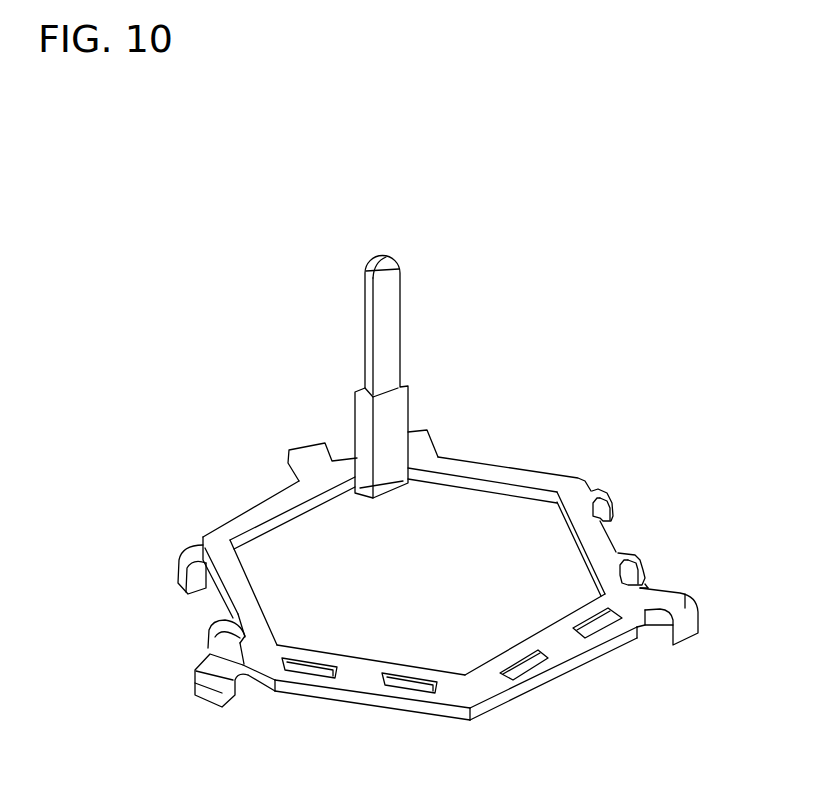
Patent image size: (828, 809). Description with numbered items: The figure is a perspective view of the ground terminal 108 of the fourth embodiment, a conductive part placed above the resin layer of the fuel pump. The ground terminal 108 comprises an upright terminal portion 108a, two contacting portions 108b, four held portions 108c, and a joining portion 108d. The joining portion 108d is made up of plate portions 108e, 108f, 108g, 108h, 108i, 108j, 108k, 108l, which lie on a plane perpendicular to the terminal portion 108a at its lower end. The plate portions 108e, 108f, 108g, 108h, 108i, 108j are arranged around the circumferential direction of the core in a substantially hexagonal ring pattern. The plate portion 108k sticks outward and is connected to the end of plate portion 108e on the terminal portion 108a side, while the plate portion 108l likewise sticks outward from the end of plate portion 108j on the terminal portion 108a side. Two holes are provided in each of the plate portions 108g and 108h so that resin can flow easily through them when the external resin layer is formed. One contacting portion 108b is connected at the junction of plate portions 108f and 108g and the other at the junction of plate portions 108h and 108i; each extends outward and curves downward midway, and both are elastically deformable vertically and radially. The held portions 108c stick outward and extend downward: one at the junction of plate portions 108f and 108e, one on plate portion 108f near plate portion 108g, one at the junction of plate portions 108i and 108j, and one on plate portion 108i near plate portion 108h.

The ground terminal 108 is at (473, 242).
The terminal portion 108a is at (385, 257).
The contacting portion 108b is at (683, 603).
The held portion 108c is at (600, 492).
The joining portion 108d is at (568, 412).
The plate portion 108e is at (493, 472).
The plate portion 108f is at (593, 537).
The plate portion 108g is at (572, 647).
The plate portion 108h is at (353, 675).
The plate portion 108i is at (240, 583).
The plate portion 108j is at (258, 512).
The plate portion 108k is at (428, 445).
The plate portion 108l is at (308, 450).